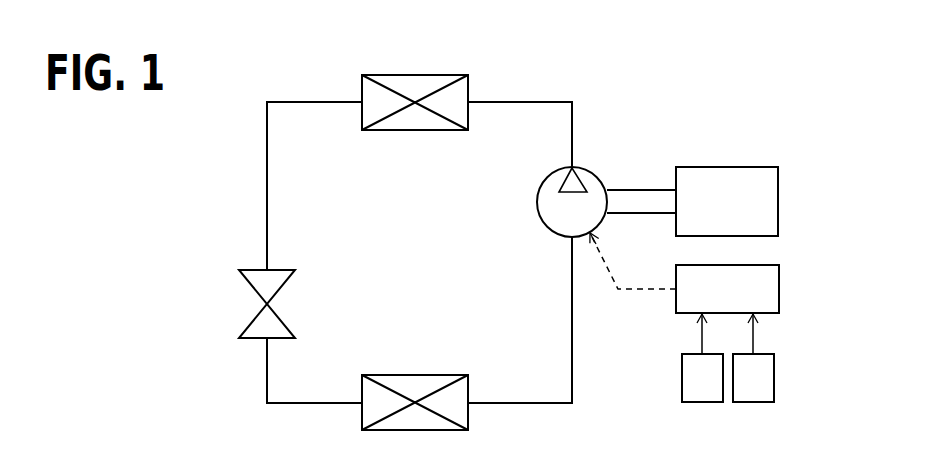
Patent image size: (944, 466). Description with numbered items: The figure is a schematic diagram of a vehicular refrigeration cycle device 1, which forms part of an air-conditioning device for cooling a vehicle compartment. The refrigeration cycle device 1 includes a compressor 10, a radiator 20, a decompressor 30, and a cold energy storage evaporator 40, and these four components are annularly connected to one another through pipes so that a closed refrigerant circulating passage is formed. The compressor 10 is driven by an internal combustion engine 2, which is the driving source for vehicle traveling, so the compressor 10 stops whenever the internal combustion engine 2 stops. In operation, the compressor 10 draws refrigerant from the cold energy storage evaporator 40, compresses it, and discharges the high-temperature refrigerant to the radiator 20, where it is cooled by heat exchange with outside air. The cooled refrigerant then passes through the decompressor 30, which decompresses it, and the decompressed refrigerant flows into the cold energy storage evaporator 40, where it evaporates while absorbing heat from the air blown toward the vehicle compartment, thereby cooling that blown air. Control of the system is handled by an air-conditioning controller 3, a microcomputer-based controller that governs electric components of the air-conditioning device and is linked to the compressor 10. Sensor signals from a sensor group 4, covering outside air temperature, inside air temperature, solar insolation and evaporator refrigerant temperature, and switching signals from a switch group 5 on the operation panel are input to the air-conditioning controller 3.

The vehicular refrigeration cycle device 1 is at (536, 71).
The internal combustion engine 2 is at (755, 167).
The air-conditioning controller 3 is at (780, 288).
The sensor group 4 is at (702, 403).
The switch group 5 is at (753, 403).
The compressor 10 is at (588, 168).
The radiator 20 is at (392, 75).
The decompressor 30 is at (258, 270).
The cold energy storage evaporator 40 is at (436, 430).